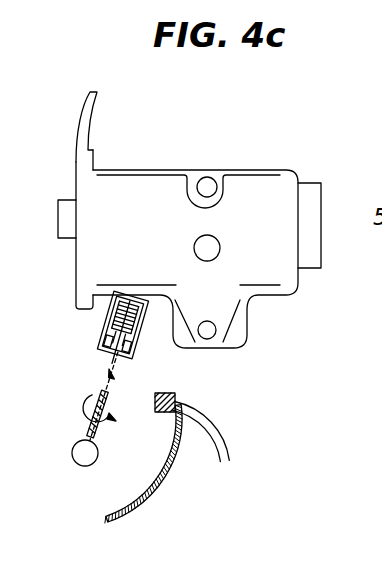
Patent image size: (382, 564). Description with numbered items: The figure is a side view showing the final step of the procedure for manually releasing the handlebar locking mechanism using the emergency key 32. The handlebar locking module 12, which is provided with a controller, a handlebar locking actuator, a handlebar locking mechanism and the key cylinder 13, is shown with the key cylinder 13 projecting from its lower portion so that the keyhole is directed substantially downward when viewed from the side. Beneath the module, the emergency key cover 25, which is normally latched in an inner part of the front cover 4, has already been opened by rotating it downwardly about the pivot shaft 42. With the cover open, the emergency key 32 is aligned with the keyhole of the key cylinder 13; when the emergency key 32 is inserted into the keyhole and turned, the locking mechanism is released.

The handlebar locking module 12 is at (225, 168).
The key cylinder 13 is at (140, 335).
The emergency key 32 is at (82, 467).
The pivot shaft 42 is at (175, 395).
The front cover 4 is at (223, 437).
The emergency key cover 25 is at (137, 513).